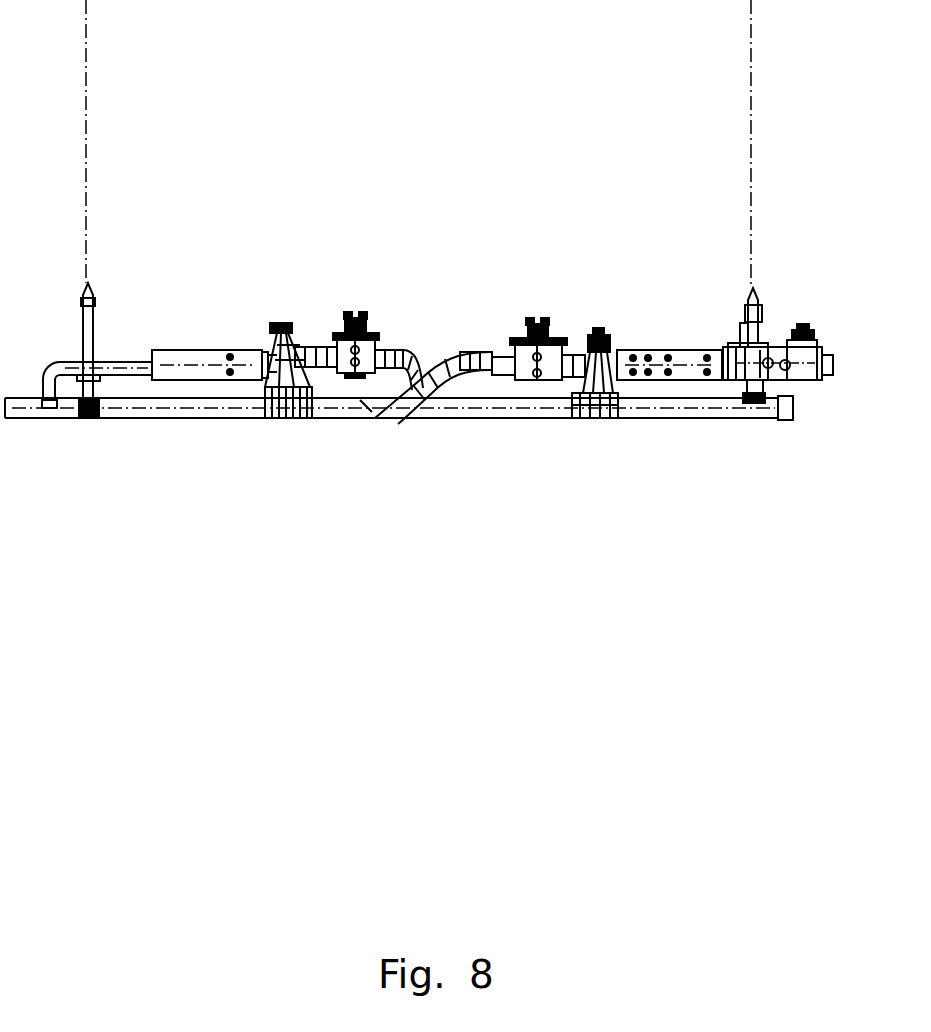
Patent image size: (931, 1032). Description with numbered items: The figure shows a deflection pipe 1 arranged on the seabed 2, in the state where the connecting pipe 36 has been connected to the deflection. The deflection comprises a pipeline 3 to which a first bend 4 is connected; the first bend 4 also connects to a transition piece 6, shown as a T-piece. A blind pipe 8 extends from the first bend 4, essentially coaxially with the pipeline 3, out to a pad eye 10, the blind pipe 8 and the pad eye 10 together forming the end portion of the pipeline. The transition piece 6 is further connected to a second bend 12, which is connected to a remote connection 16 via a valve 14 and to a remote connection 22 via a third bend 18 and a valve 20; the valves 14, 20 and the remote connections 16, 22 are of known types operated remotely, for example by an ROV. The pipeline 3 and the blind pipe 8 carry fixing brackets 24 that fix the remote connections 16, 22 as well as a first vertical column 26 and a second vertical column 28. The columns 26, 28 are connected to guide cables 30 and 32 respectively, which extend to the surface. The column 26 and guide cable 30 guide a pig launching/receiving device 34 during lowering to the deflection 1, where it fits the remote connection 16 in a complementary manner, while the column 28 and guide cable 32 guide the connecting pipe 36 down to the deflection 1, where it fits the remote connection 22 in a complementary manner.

The deflection pipe 1 is at (450, 297).
The seabed 2 is at (822, 407).
The pipeline 3 is at (120, 410).
The first bend 4 is at (395, 405).
The transition piece 6 is at (417, 395).
The blind pipe 8 is at (637, 410).
The pad eye 10 is at (783, 412).
The second bend 12 is at (478, 353).
The valve 14 is at (525, 323).
The remote connection 16 is at (570, 330).
The third bend 18 is at (395, 345).
The valve 20 is at (371, 313).
The remote connection 22 is at (283, 323).
The fixing brackets 24 is at (282, 420).
The first vertical column 26 is at (730, 385).
The second vertical column 28 is at (84, 343).
The guide cable 30 is at (751, 202).
The guide cable 32 is at (87, 190).
The pig launching/receiving device 34 is at (690, 350).
The connecting pipe 36 is at (172, 350).